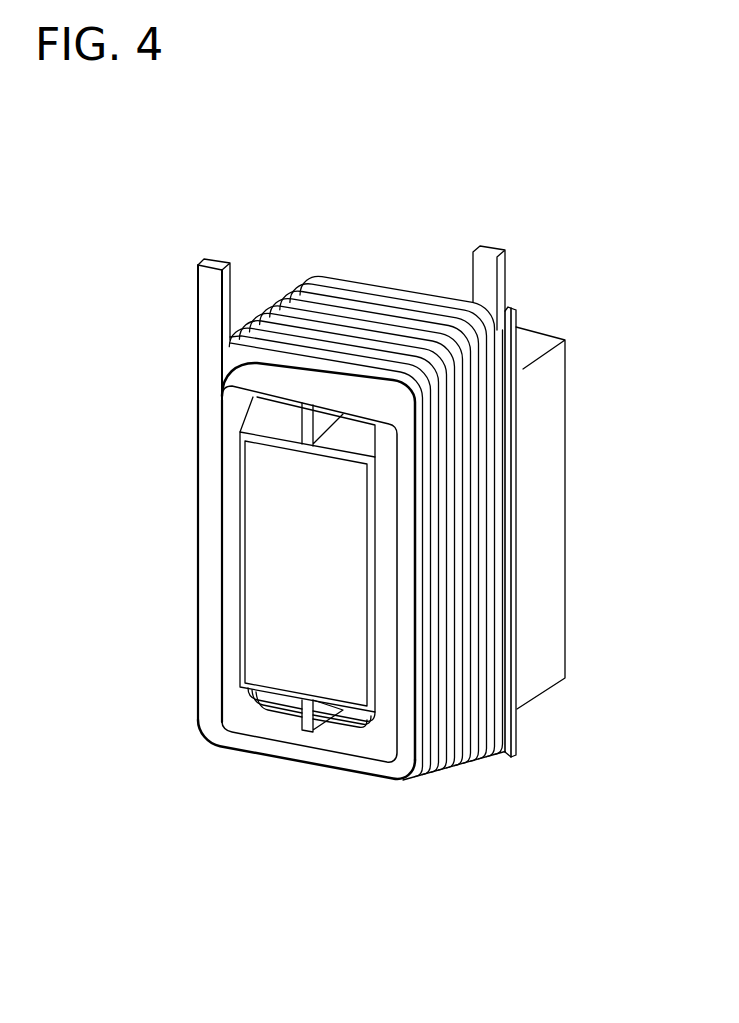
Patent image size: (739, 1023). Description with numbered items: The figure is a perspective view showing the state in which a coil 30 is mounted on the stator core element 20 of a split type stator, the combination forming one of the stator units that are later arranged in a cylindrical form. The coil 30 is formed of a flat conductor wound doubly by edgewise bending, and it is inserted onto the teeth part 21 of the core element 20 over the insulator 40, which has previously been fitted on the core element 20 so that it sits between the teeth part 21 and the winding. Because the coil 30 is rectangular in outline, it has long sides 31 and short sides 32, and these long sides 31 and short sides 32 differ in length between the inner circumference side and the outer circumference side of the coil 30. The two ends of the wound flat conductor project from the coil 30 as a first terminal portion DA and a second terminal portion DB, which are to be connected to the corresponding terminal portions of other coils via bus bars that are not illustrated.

The stator core element 20 is at (552, 443).
The teeth part 21 is at (272, 592).
The coil 30 is at (443, 779).
The long side 31 is at (207, 522).
The short side 32 is at (306, 757).
The insulator 40 is at (507, 751).
The first terminal portion DA is at (224, 263).
The second terminal portion DB is at (490, 251).